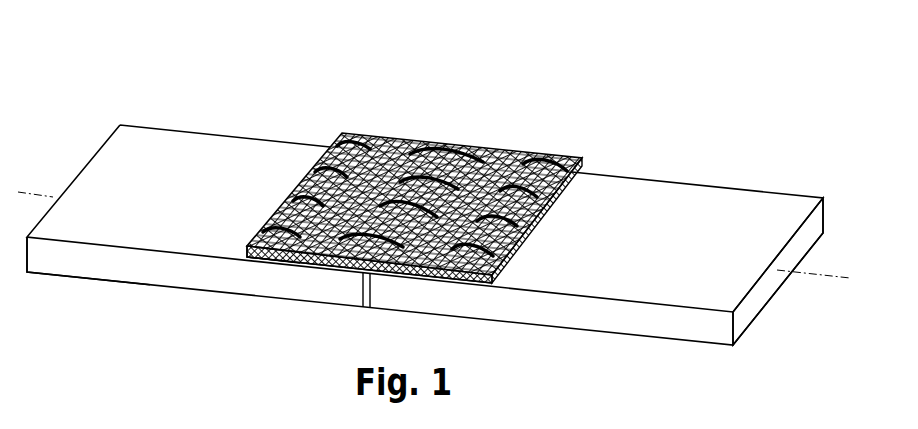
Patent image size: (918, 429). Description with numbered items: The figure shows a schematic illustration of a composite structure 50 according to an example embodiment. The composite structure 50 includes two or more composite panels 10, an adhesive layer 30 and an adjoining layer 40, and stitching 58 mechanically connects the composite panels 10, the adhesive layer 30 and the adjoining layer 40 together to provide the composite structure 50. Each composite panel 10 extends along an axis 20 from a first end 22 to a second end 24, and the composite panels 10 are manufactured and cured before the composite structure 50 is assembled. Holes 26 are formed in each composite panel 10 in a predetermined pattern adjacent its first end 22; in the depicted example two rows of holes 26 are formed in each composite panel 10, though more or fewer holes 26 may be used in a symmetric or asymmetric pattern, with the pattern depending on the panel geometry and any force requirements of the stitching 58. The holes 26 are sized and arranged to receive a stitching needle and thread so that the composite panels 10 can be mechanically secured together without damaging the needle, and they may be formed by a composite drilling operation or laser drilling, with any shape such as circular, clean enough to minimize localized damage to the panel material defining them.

The composite panel 10 is at (178, 100).
The axis 20 is at (833, 278).
The first end 22 is at (382, 295).
The second end 24 is at (48, 260).
The holes 26 is at (322, 251).
The adhesive layer 30 is at (248, 263).
The adjoining layer 40 is at (393, 150).
The composite structure 50 is at (441, 97).
The stitching 58 is at (455, 148).